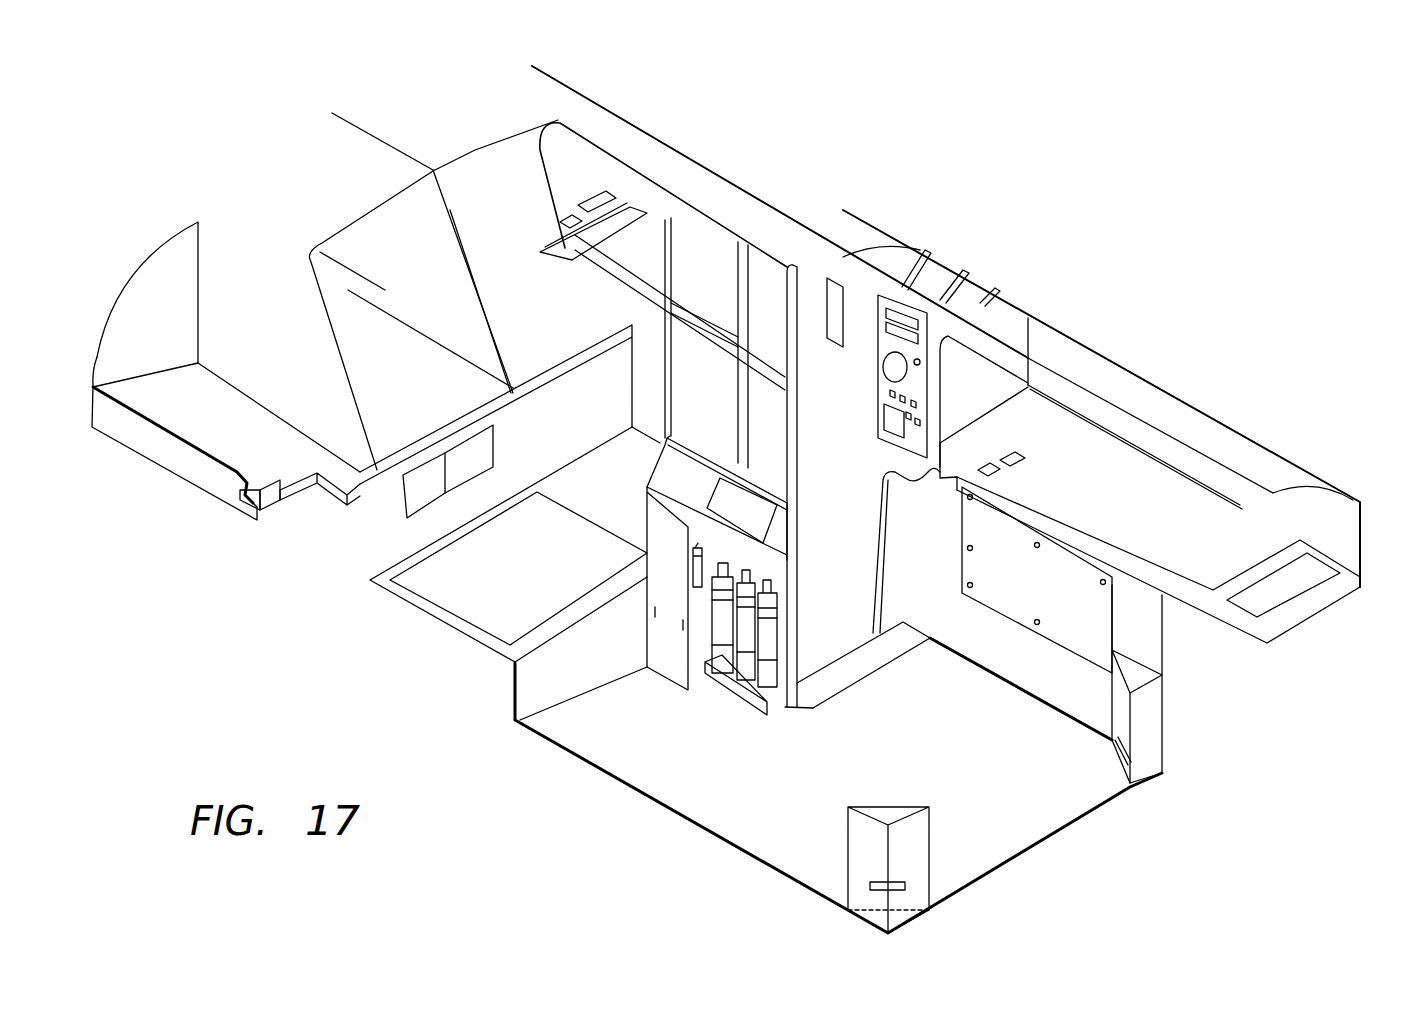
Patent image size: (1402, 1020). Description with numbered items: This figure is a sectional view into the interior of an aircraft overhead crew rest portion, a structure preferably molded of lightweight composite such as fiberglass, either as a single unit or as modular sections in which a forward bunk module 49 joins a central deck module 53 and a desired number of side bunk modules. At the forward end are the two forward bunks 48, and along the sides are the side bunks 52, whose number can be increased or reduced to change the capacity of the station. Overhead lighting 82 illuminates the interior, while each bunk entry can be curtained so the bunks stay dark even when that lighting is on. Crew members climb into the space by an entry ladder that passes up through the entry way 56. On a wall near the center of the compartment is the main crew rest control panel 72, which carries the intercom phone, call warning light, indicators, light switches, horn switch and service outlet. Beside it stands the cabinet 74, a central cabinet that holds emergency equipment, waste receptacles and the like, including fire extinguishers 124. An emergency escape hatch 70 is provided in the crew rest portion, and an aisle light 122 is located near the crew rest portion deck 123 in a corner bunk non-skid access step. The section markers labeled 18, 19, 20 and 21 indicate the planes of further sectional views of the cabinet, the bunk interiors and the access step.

The forward bunk module 49 is at (410, 125).
The forward bunks 48 is at (424, 402).
The side bunks 52 is at (270, 476).
The overhead lighting 82 is at (480, 148).
The main crew rest control panel 72 is at (928, 327).
The entry way 56 is at (834, 505).
The fire extinguishers 124 is at (712, 633).
The cabinet 74 is at (755, 732).
The emergency escape hatch 70 is at (470, 597).
The crew rest portion deck 123 is at (727, 812).
The central deck module 53 is at (800, 826).
The aisle light 122 is at (1112, 738).
The section line 18- 18 is at (640, 645).
The section line 19- 19 is at (615, 278).
The section line 20- 20 is at (795, 337).
The section line 21- 21 is at (1150, 625).